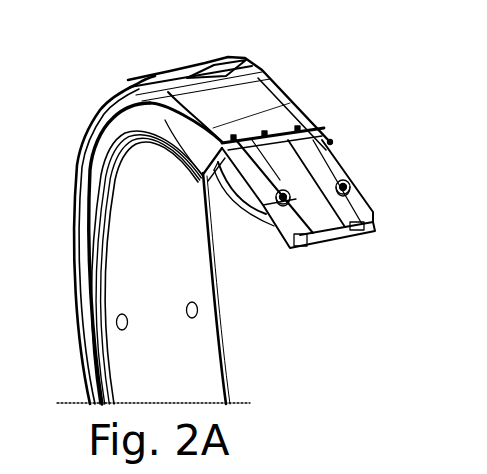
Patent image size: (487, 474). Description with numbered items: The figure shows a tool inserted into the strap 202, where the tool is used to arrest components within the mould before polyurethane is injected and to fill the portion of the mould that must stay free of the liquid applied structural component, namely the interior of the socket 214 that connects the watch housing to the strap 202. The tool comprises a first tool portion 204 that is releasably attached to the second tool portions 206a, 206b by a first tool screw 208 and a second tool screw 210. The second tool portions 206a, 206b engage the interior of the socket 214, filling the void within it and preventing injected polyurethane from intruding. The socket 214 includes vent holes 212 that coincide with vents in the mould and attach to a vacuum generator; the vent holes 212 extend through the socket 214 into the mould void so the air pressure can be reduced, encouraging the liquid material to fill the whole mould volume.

The strap 202 is at (123, 138).
The first tool portion 204 is at (280, 243).
The second tool portion 206a is at (372, 210).
The second tool portion 206b is at (310, 253).
The first tool screw 208 is at (258, 222).
The second tool screw 210 is at (350, 190).
The vent holes 212 is at (262, 101).
The socket 214 is at (293, 110).